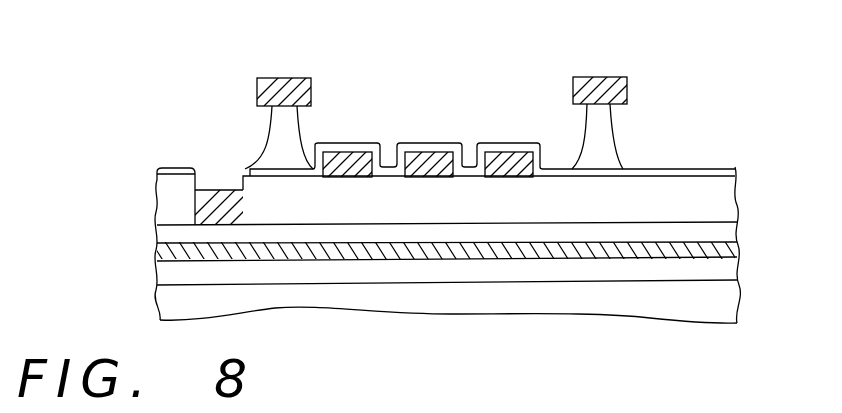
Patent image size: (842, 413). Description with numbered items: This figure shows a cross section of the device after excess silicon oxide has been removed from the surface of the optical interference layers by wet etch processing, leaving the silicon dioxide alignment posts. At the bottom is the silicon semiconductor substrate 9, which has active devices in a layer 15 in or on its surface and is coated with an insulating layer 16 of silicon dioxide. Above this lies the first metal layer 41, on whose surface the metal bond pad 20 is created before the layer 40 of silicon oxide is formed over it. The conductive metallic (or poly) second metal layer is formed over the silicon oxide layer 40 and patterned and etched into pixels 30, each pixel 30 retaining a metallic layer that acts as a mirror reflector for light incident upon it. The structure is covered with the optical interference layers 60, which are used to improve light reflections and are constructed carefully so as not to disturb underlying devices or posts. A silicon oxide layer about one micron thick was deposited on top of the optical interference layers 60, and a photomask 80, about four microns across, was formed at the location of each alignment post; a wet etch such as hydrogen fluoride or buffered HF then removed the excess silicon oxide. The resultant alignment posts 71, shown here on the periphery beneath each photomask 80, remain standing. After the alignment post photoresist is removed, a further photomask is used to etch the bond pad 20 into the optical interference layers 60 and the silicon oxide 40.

The substrate 9 is at (742, 302).
The layer of active devices 15 is at (740, 270).
The insulating layer 16 is at (738, 245).
The metal bond pad 20 is at (200, 205).
The pixel 30 is at (422, 155).
The silicon oxide layer 40 is at (740, 205).
The first metal layer 41 is at (162, 237).
The optical interference layers 60 is at (360, 150).
The alignment post 71 is at (280, 140).
The photomask 80 is at (285, 82).